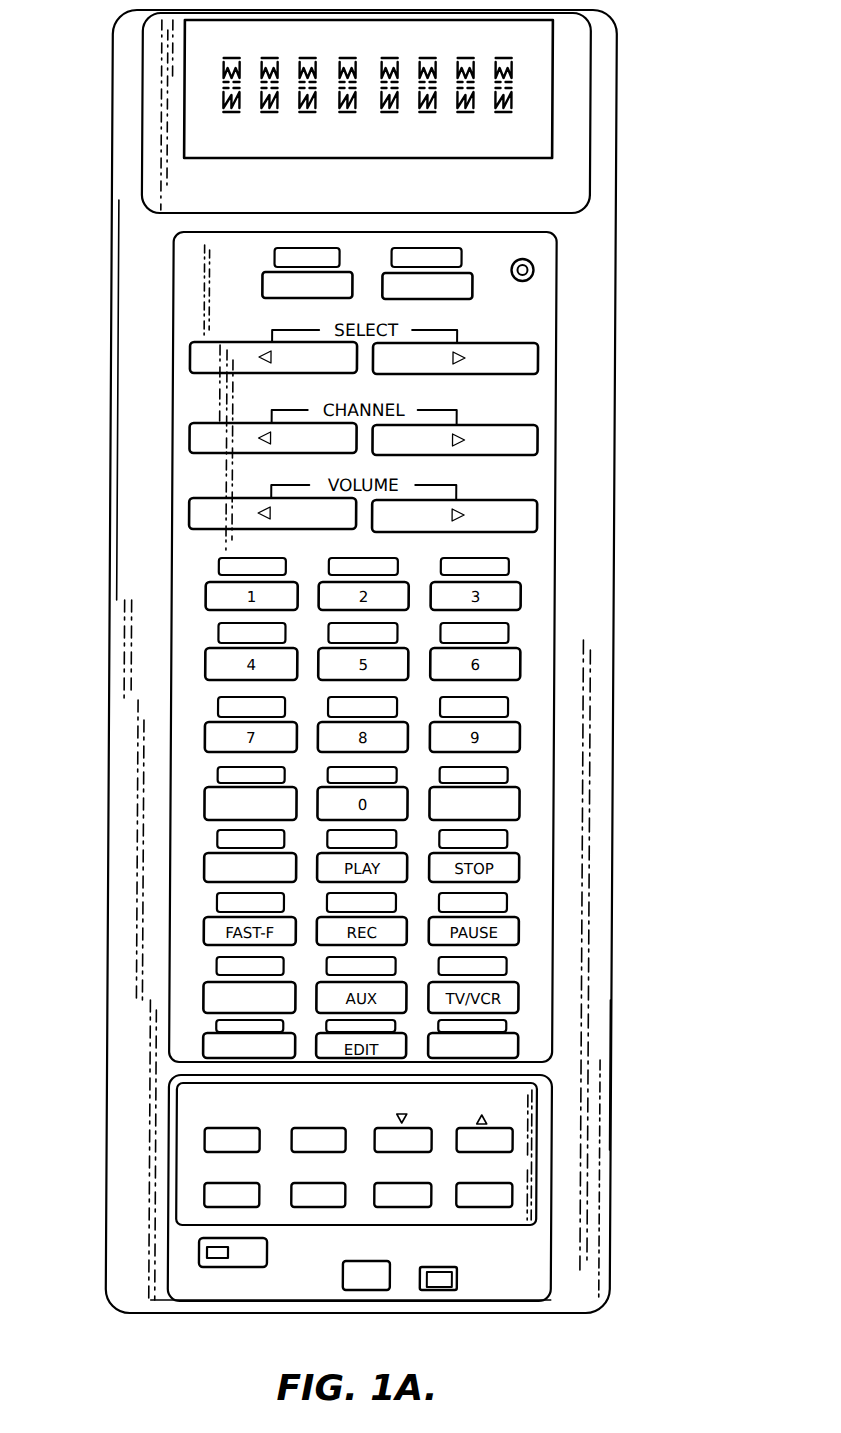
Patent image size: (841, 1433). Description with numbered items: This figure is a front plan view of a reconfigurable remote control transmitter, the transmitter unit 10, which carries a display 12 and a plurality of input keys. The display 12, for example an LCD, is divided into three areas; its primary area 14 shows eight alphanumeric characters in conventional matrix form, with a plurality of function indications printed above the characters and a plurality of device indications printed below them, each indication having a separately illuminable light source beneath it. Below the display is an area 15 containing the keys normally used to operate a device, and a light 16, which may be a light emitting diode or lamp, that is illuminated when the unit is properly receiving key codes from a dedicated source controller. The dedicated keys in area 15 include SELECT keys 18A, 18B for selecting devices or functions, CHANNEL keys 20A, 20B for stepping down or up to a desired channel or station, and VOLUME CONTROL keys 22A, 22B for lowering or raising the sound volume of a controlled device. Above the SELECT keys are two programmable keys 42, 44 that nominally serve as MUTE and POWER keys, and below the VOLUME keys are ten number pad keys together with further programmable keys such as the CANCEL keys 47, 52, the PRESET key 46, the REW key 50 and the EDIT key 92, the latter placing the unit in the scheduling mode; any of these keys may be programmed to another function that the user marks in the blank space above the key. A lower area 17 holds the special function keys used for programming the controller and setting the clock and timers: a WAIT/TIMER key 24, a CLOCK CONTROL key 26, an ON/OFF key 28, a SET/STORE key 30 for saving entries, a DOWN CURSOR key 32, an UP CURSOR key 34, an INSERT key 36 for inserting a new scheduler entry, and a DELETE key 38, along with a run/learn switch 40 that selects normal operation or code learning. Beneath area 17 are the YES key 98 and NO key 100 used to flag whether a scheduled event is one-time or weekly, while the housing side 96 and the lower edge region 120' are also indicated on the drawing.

The transmitter unit 10 is at (655, 607).
The display 12 is at (537, 106).
The primary area 14 is at (218, 76).
The area 15 is at (197, 256).
The light 16 is at (540, 266).
The area 17 is at (188, 1115).
The SELECT key 18A is at (196, 360).
The SELECT key 18B is at (532, 368).
The CHANNEL key 20A is at (197, 438).
The CHANNEL key 20B is at (532, 441).
The VOLUME CONTROL key 22A is at (197, 513).
The VOLUME CONTROL key 22B is at (532, 517).
The WAIT/TIMER key 24 is at (215, 1137).
The CLOCK CONTROL key 26 is at (215, 1193).
The ON/OFF key 28 is at (340, 1142).
The SET/STORE key 30 is at (310, 1207).
The DOWN CURSOR key 32 is at (420, 1140).
The UP CURSOR key 34 is at (507, 1140).
The INSERT key 36 is at (396, 1207).
The DELETE key 38 is at (488, 1207).
The run/learn switch 40 is at (206, 1256).
The MUTE key 42 is at (265, 284).
The POWER key 44 is at (460, 295).
The preset key 46 is at (524, 812).
The cancel key 47 is at (209, 803).
The rewind key 50 is at (209, 867).
The cancel key 52 is at (209, 996).
The EDIT key 92 is at (524, 1048).
The housing side wall 96 is at (612, 1077).
The YES key 98 is at (362, 1293).
The NO key 100 is at (440, 1293).
The housing bottom edge 120' is at (502, 1329).